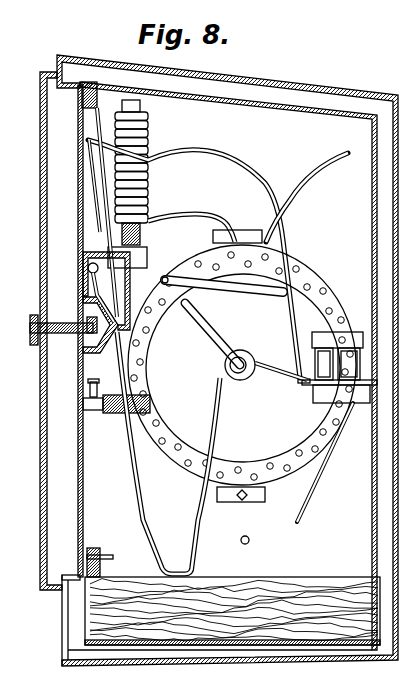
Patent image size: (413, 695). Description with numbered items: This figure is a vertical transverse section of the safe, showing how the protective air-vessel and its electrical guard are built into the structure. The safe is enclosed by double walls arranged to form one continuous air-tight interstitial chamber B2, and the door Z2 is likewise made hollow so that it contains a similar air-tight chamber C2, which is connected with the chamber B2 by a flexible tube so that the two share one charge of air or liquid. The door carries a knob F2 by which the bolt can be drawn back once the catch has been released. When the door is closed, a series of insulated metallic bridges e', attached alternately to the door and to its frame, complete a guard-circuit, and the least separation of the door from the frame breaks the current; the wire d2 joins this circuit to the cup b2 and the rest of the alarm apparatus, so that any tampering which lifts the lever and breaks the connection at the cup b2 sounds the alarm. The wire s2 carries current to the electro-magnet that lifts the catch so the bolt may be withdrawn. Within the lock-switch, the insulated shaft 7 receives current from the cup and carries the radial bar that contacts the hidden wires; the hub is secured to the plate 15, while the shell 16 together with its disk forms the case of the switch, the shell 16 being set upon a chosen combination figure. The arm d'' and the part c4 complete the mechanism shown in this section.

The door Z2 is at (212, 360).
The air-tight chamber C2 is at (90, 302).
The knob F2 is at (53, 330).
The wire d2 is at (218, 261).
The wire s2 is at (171, 184).
The plate 15 is at (242, 366).
The shell 16 is at (234, 348).
The insulated shaft 7 is at (240, 365).
The pendulum arm d'' is at (183, 453).
The insulated metallic bridges e' is at (100, 560).
The interstitial chamber B2 is at (346, 427).
The battery cell c4 is at (324, 364).
The cup b2 is at (349, 364).